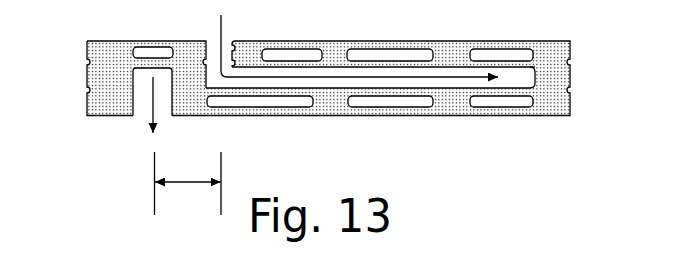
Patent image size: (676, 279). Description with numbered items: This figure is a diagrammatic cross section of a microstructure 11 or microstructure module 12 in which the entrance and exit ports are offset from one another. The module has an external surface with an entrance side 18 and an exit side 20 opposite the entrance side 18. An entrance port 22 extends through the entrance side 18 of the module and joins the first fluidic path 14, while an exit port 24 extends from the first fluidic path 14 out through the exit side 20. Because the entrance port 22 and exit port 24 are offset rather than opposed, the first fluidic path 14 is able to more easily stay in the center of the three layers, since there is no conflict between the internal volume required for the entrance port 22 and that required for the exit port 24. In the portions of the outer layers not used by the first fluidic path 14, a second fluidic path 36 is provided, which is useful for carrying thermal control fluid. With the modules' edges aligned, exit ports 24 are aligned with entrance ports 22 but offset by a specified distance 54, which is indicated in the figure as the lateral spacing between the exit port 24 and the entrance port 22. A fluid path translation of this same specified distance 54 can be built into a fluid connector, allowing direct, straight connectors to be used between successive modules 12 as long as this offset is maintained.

The microstructure 11 is at (328, 114).
The microstructure module 12 is at (328, 78).
The first fluidic path 14 is at (518, 80).
The entrance side 18 is at (368, 39).
The exit side 20 is at (243, 119).
The entrance port 22 is at (209, 32).
The exit port 24 is at (140, 127).
The second fluidic path 36 is at (402, 56).
The specified distance 54 is at (187, 184).